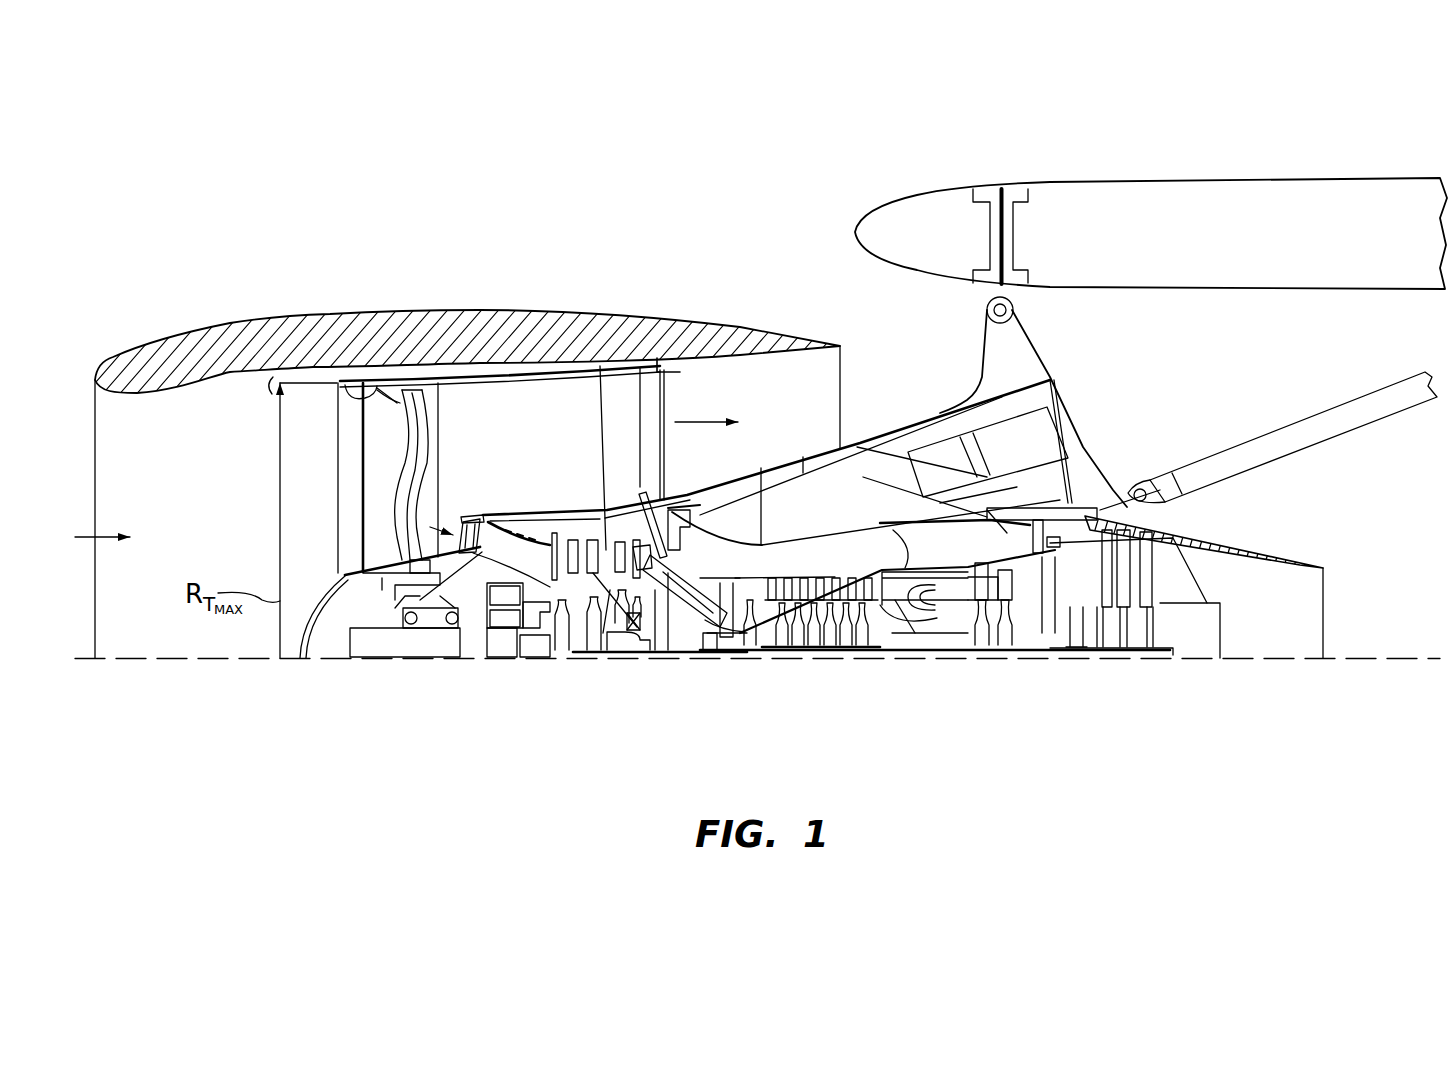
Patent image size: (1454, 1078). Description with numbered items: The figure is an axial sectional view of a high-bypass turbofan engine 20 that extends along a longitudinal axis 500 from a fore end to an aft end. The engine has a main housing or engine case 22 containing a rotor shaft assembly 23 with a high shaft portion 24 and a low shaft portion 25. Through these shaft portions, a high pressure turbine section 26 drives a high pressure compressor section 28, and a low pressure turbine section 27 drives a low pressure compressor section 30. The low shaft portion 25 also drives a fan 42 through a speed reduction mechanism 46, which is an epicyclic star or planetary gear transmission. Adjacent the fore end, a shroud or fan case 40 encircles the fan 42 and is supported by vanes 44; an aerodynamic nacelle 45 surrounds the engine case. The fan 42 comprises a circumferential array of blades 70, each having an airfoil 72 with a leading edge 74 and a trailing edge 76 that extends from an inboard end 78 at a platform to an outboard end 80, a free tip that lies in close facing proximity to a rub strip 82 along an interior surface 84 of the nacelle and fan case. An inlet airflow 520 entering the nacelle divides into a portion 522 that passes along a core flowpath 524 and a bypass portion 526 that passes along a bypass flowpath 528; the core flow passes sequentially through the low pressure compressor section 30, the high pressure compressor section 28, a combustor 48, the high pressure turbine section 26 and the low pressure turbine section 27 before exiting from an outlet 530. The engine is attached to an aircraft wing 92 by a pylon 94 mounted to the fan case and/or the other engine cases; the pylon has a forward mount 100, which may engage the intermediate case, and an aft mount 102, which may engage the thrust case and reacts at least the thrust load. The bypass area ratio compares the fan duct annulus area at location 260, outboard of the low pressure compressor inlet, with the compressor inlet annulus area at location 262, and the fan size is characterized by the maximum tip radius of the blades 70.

The turbofan engine 20 is at (355, 232).
The main housing (engine case) 22 is at (858, 560).
The rotor shaft assembly 23 is at (823, 672).
The high shaft portion 24 is at (915, 655).
The low shaft portion 25 is at (748, 662).
The high pressure turbine section 26 is at (1003, 655).
The low pressure turbine section 27 is at (1097, 652).
The high pressure compressor section 28 is at (790, 583).
The low pressure compressor section 30 is at (623, 533).
The shroud (fan case) 40 is at (462, 367).
The fan 42 is at (313, 640).
The vanes 44 is at (628, 395).
The aerodynamic nacelle 45 is at (215, 345).
The speed reduction mechanism 46 is at (503, 668).
The combustor 48 is at (925, 578).
The blades 70 is at (378, 472).
The airfoil 72 is at (380, 517).
The leading edge 74 is at (363, 493).
The trailing edge 76 is at (427, 470).
The inboard end 78 is at (383, 580).
The outboard end 80 is at (402, 380).
The rub strip 82 is at (352, 378).
The interior surface 84 is at (203, 384).
The aircraft wing 92 is at (1229, 252).
The pylon 94 is at (1373, 448).
The forward mount 100 is at (670, 505).
The aft/rear mount 102 is at (1052, 530).
The location 260 is at (460, 403).
The location 262 is at (448, 519).
The longitudinal axis 500 is at (158, 661).
The inlet airflow 520 is at (107, 528).
The portion 522 is at (425, 640).
The core flowpath 524 is at (700, 565).
The bypass portion 526 is at (700, 420).
The bypass flowpath 528 is at (767, 444).
The outlet 530 is at (1338, 592).